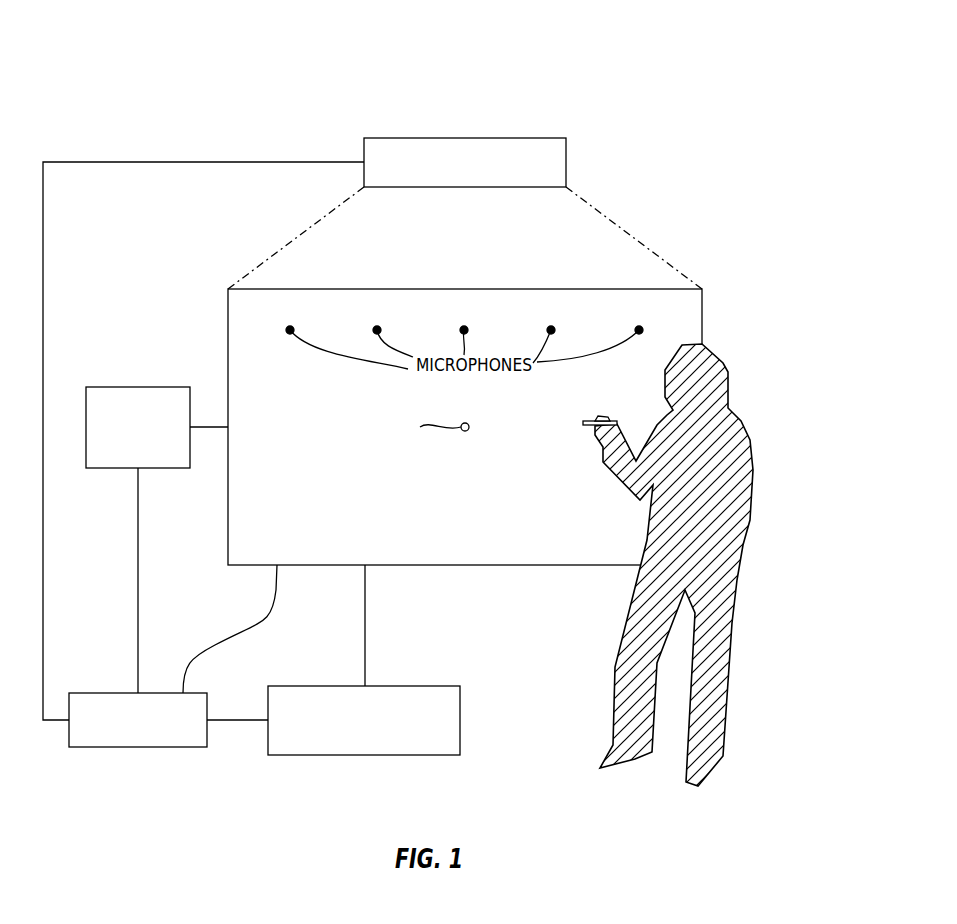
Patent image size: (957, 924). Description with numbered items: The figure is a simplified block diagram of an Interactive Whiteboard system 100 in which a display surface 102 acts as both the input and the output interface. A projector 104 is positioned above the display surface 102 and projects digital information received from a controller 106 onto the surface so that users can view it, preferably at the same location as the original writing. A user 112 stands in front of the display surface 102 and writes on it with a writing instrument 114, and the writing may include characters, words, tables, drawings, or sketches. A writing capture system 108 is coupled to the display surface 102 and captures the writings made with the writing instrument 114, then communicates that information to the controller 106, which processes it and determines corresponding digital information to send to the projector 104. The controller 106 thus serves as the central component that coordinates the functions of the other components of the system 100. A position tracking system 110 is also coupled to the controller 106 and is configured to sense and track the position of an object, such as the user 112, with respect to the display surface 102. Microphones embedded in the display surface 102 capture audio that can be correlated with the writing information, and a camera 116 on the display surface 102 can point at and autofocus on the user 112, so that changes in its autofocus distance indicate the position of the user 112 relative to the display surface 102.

The Interactive Whiteboard (IWB) system 100 is at (547, 50).
The display surface 102 is at (465, 565).
The projector 104 is at (566, 160).
The controller 106 is at (138, 747).
The writing capture system 108 is at (138, 387).
The position tracking system 110 is at (460, 717).
The user 112 is at (733, 550).
The writing instrument 114 is at (593, 430).
The camera 116 is at (391, 440).